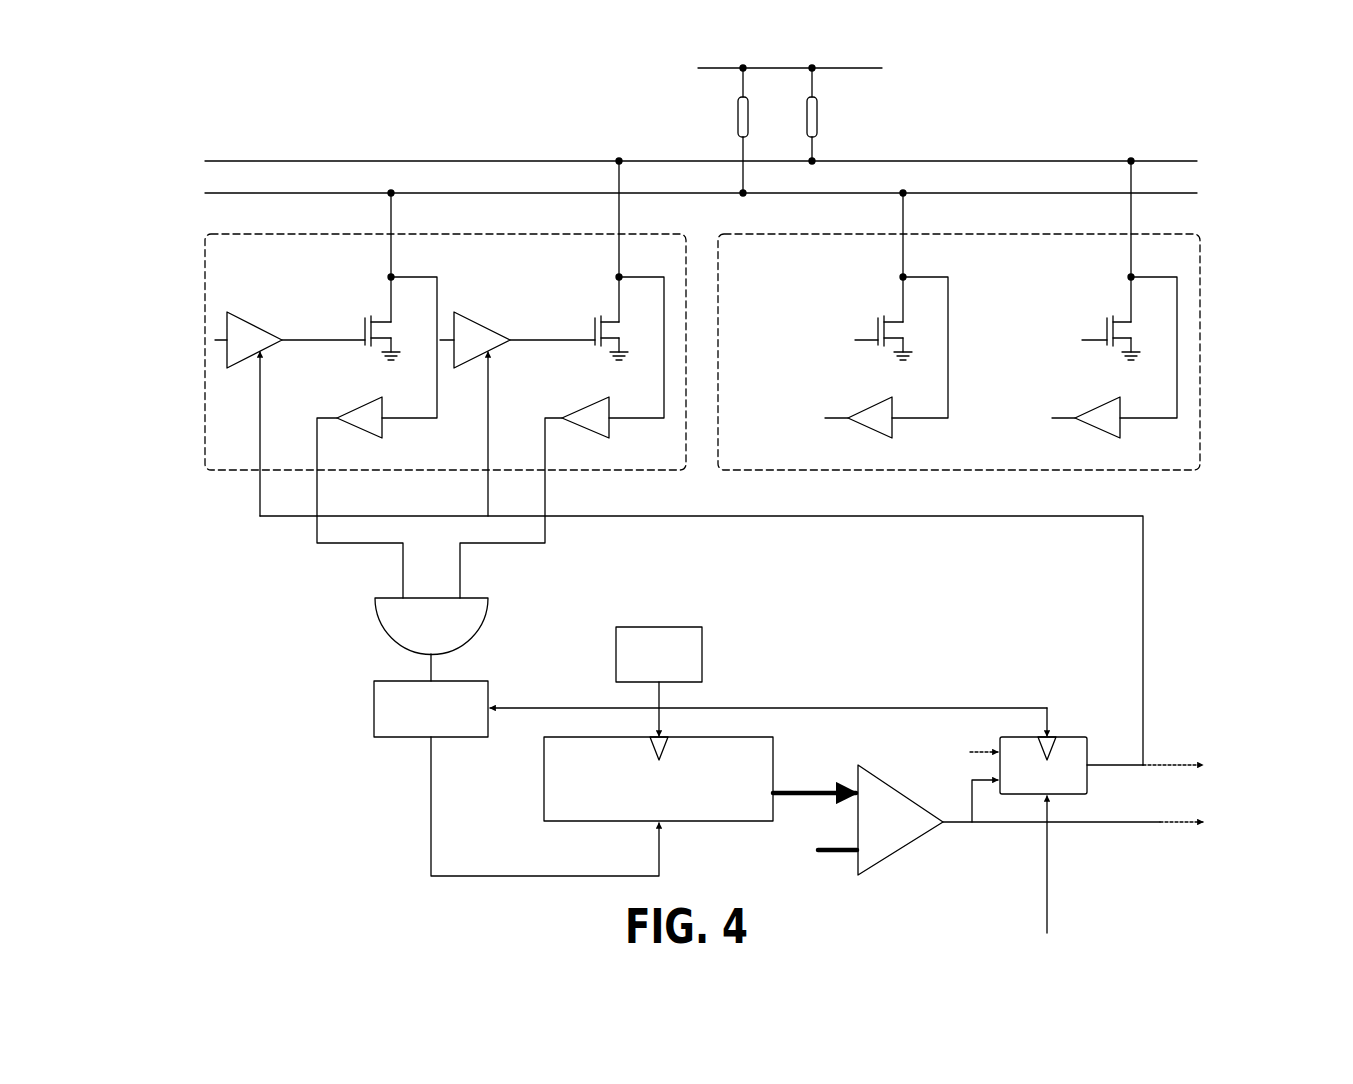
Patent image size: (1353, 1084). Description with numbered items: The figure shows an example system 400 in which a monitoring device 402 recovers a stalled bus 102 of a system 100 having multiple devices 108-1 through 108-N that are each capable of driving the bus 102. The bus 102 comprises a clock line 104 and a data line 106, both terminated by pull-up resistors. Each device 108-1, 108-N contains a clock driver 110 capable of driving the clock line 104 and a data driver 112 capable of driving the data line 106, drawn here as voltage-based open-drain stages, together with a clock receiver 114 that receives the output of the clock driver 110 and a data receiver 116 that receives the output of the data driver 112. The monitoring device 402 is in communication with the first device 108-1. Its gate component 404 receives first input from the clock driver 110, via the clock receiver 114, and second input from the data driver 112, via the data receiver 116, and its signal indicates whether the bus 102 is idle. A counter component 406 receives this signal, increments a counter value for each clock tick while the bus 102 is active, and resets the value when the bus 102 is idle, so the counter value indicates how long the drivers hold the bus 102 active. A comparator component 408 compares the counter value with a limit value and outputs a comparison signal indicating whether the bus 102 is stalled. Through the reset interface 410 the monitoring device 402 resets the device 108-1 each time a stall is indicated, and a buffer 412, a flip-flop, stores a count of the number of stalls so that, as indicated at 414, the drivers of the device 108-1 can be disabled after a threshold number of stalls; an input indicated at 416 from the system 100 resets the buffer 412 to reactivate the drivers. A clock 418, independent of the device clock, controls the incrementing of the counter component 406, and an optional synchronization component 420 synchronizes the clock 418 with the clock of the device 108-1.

The system 400 is at (180, 65).
The system 100 is at (160, 80).
The bus 102 is at (200, 145).
The clock line 104 is at (385, 182).
The data line 106 is at (258, 137).
The device 108-1 is at (213, 472).
The device 108-N is at (747, 472).
The clock driver 110 is at (250, 345).
The data driver 112 is at (465, 333).
The clock receiver 114 is at (360, 422).
The data receiver 116 is at (592, 420).
The monitoring device 402 is at (160, 541).
The gate component 404 is at (435, 638).
The counter component 406 is at (717, 803).
The comparator component 408 is at (878, 833).
The reset interface 410 is at (1162, 821).
The buffer 412 is at (1068, 755).
The disable driver output 414 is at (1170, 765).
The reactivate input 416 is at (1047, 889).
The clock 418 is at (682, 653).
The synchronization component 420 is at (415, 727).